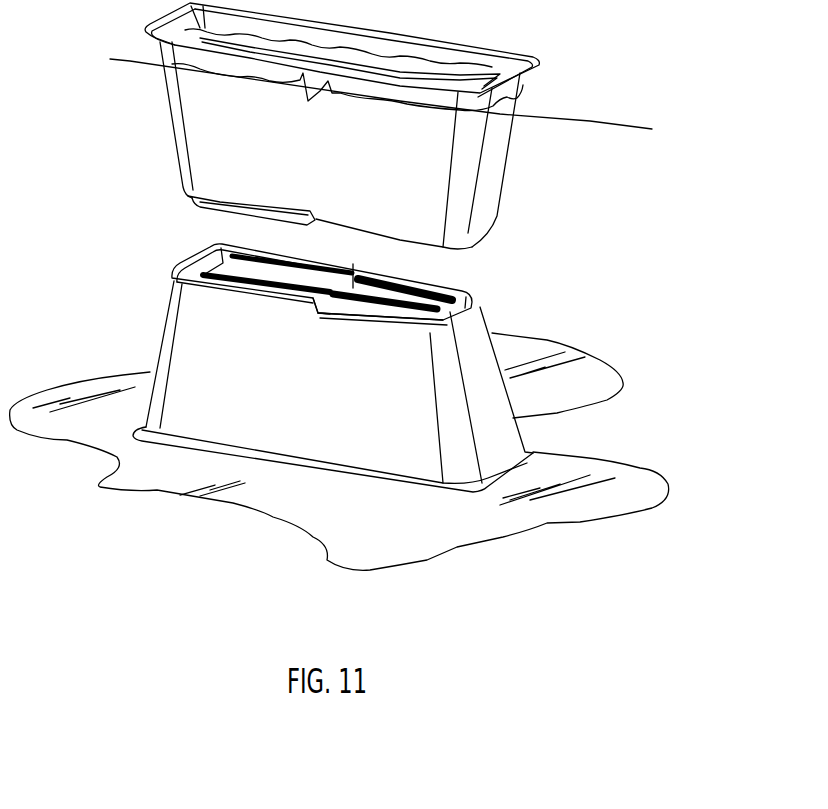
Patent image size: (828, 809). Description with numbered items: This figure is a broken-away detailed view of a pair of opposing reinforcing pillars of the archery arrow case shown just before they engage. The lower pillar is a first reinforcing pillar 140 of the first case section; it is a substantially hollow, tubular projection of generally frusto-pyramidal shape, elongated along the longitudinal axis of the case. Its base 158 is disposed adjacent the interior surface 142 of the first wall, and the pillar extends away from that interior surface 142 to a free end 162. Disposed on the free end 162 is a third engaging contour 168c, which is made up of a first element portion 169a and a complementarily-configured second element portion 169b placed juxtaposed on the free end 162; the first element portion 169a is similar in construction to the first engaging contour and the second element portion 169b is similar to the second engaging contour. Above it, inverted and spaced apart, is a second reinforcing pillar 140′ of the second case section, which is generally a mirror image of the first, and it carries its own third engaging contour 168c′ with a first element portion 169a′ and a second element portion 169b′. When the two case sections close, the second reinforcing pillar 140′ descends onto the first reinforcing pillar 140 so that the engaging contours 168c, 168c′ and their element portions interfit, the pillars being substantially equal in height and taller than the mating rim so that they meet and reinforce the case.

The first reinforcing pillar 140 is at (556, 331).
The second reinforcing pillar 140′ is at (540, 171).
The interior surface 142 is at (290, 497).
The base 158 is at (420, 483).
The free end 162 is at (303, 333).
The third engaging contour 168c is at (388, 263).
The third engaging contour of second reinforcing pillar 168c′ is at (250, 232).
The first element portion 169a is at (200, 257).
The second element portion 169b is at (460, 297).
The first element portion of second reinforcing pillar 169a′ is at (472, 238).
The second element portion of second reinforcing pillar 169b′ is at (216, 196).